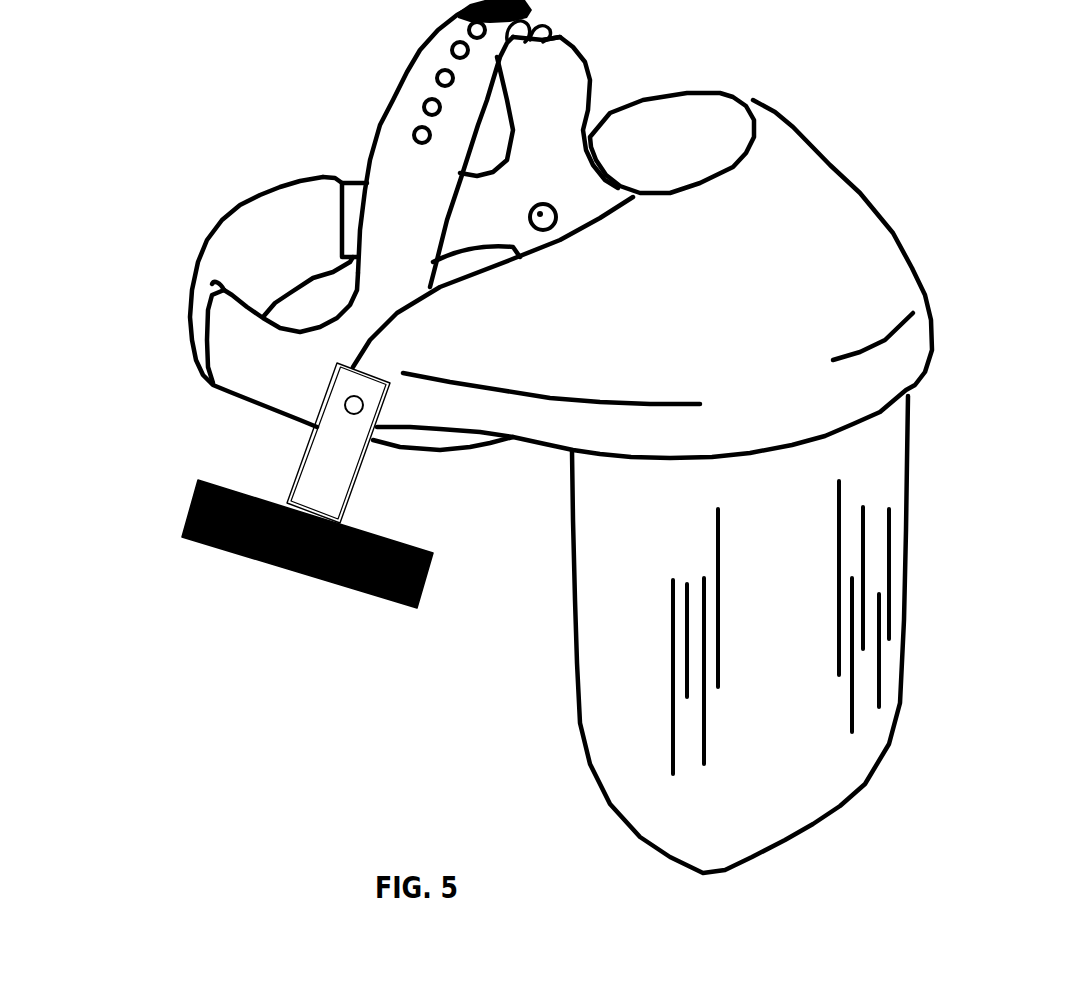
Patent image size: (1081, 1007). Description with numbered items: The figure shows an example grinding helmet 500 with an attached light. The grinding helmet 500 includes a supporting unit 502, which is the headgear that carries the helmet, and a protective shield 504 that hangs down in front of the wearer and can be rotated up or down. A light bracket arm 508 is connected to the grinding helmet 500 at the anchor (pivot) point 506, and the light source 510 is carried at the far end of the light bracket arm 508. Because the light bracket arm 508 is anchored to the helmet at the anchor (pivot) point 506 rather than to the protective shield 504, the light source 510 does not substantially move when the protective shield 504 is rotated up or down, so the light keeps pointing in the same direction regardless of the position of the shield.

The grinding helmet 500 is at (148, 42).
The supporting unit 502 is at (188, 217).
The protective shield 504 is at (925, 464).
The anchor (pivot) point 506 is at (340, 403).
The light bracket arm 508 is at (280, 474).
The light source 510 is at (248, 559).